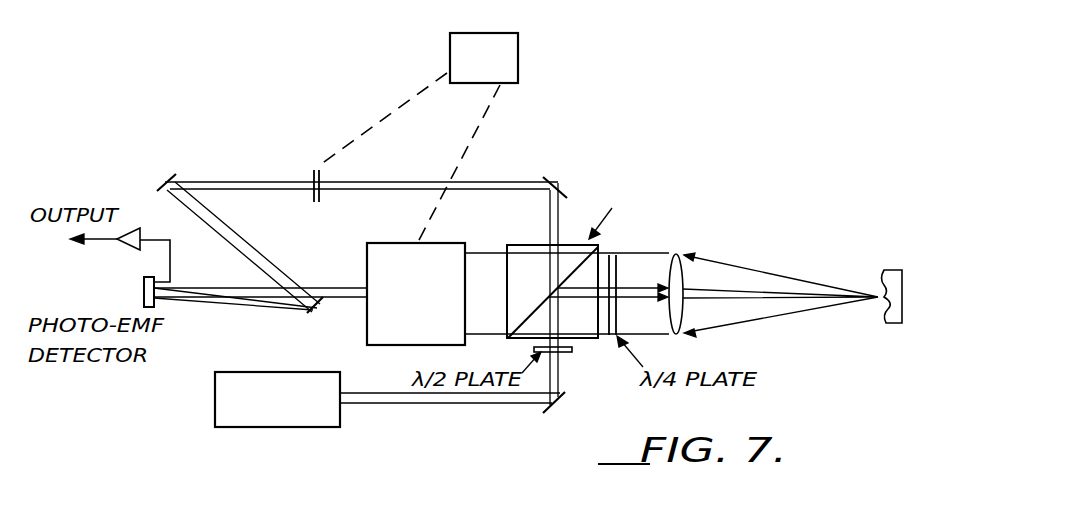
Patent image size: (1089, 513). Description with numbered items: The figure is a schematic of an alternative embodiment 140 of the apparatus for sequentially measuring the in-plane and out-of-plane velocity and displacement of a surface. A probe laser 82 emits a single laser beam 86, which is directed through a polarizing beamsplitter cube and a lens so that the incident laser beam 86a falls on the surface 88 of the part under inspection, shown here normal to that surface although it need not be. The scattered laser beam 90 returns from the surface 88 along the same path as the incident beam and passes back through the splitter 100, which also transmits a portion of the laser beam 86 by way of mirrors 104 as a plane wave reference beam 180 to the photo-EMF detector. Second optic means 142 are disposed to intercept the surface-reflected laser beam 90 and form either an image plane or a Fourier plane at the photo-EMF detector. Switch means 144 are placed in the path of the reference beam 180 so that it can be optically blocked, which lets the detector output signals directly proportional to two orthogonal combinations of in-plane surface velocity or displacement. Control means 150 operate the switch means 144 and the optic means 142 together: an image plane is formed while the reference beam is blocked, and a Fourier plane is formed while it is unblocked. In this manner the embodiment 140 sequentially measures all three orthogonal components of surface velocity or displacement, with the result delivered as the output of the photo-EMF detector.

The probe laser 82 is at (222, 416).
The laser beam 86 is at (417, 403).
The incident laser beam 86a is at (773, 290).
The surface 88 is at (885, 324).
The scattered laser beam 90 is at (337, 287).
The splitter 100 is at (535, 307).
The mirrors 104 is at (163, 178).
The embodiment 140 is at (640, 137).
The second optic means 142 is at (402, 346).
The switch means 144 is at (304, 171).
The control means 150 is at (520, 63).
The reference beam 180 is at (255, 242).